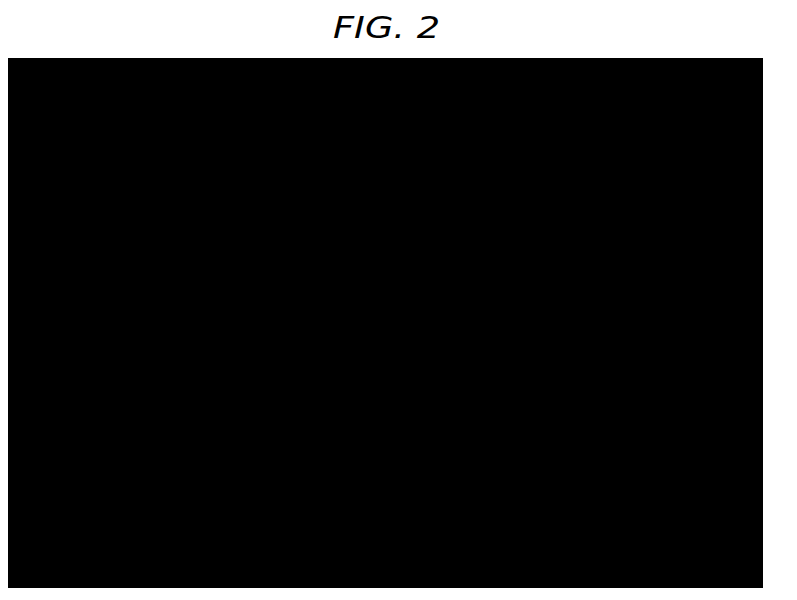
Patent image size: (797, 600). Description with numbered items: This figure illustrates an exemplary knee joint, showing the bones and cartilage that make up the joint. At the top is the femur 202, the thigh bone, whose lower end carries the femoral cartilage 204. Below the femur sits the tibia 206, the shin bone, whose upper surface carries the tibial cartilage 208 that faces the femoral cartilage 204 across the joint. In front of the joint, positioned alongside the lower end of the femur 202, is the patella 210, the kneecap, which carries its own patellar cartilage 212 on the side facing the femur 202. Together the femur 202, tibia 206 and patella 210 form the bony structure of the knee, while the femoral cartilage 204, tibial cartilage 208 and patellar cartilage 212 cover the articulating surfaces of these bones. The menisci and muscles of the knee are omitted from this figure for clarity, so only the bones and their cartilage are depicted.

The femur 202 is at (473, 163).
The femoral cartilage 204 is at (543, 295).
The tibia 206 is at (447, 485).
The tibial cartilage 208 is at (503, 395).
The patella 210 is at (277, 220).
The patellar cartilage 212 is at (307, 250).